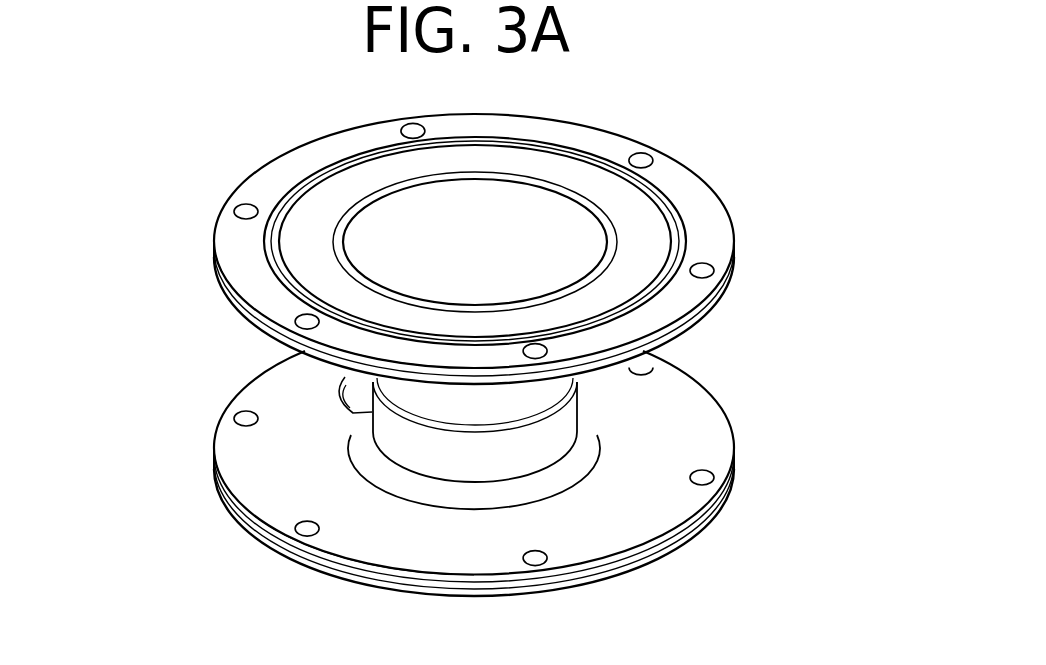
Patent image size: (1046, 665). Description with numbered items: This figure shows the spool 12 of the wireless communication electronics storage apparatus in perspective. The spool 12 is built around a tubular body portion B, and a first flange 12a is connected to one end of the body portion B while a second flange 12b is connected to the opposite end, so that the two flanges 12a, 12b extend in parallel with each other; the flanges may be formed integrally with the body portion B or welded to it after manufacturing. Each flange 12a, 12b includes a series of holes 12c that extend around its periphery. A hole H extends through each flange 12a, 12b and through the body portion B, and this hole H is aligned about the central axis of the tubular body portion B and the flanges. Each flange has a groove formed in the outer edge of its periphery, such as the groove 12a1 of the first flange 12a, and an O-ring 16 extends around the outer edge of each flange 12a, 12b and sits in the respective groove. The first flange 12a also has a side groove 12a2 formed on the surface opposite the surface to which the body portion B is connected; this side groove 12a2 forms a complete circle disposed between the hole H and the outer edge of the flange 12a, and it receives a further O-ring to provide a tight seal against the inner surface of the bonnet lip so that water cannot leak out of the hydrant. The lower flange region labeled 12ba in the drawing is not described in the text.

The spool 12 is at (443, 362).
The first flange 12a is at (378, 262).
The groove 12a1 is at (319, 369).
The side groove 12a2 is at (279, 288).
The second flange 12b is at (398, 489).
The outer peripheral portion of lower flange 12ba is at (306, 571).
The holes 12c is at (653, 150).
The O-ring 16 is at (234, 318).
The hole H is at (414, 231).
The tubular body portion B is at (382, 442).